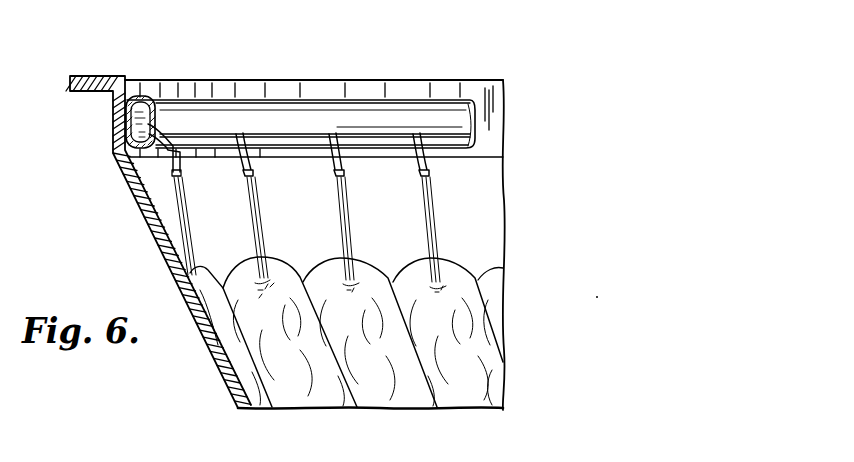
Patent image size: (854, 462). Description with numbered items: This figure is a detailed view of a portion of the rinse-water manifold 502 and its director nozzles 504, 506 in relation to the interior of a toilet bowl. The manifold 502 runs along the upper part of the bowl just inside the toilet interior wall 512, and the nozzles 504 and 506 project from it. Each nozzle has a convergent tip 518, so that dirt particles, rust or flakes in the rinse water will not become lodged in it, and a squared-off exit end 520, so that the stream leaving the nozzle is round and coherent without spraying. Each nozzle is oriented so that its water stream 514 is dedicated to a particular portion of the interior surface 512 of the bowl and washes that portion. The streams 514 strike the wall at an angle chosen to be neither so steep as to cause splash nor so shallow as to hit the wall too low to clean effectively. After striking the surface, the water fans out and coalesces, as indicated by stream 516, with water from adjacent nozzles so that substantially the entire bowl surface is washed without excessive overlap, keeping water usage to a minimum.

The manifold 502 is at (320, 117).
The director nozzle 504 is at (166, 140).
The nozzle 506 is at (253, 174).
The toilet interior wall 512 is at (167, 246).
The water stream 514 is at (185, 246).
The stream 516 is at (310, 407).
The tip 518 is at (143, 100).
The exit end 520 is at (182, 176).